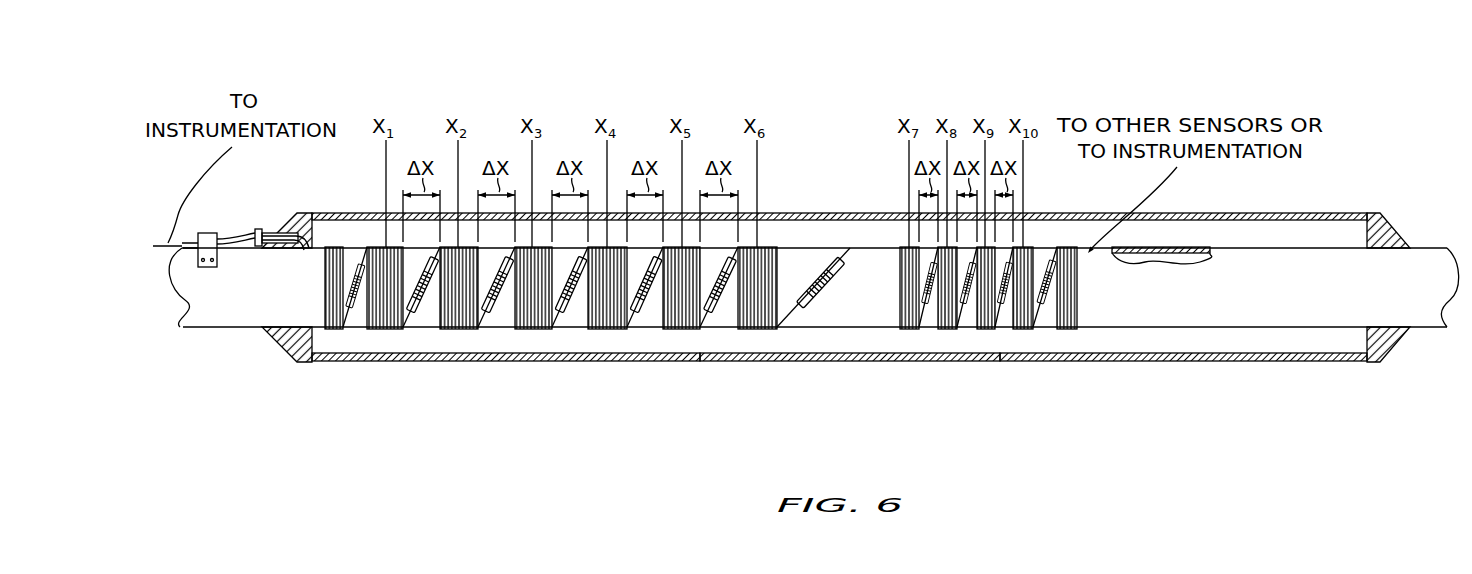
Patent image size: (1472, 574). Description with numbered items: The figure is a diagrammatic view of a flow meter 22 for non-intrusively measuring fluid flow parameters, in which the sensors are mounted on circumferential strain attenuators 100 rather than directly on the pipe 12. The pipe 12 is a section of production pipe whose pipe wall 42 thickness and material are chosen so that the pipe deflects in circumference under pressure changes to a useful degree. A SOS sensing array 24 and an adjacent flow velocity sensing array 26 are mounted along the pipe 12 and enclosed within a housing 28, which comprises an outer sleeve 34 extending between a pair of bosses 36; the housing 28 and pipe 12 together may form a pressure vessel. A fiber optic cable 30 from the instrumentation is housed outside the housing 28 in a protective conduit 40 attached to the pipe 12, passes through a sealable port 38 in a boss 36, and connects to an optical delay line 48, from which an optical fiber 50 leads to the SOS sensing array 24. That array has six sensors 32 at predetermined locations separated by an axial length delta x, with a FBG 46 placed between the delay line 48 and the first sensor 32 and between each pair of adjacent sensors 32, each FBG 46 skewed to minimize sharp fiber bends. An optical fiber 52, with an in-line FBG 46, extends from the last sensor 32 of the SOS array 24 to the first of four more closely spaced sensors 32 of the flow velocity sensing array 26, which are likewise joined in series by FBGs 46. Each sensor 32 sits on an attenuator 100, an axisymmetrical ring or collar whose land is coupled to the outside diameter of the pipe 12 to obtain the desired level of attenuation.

The pipe 12 is at (190, 330).
The flow meter 22 is at (778, 102).
The SOS sensing array 24 is at (538, 356).
The flow velocity sensing array 26 is at (968, 345).
The housing 28 is at (693, 370).
The fiber optic cable 30 is at (180, 243).
The sensor 32 is at (445, 345).
The outer sleeve 34 is at (1160, 362).
The boss 36 is at (285, 346).
The sealable port 38 is at (258, 229).
The protective conduit 40 is at (236, 238).
The pipe wall 42 is at (1190, 247).
The FBG 46 is at (357, 262).
The optical delay line 48 is at (333, 330).
The optical fiber 50 is at (350, 330).
The optical fiber 52 is at (820, 270).
The attenuator 100 is at (352, 252).